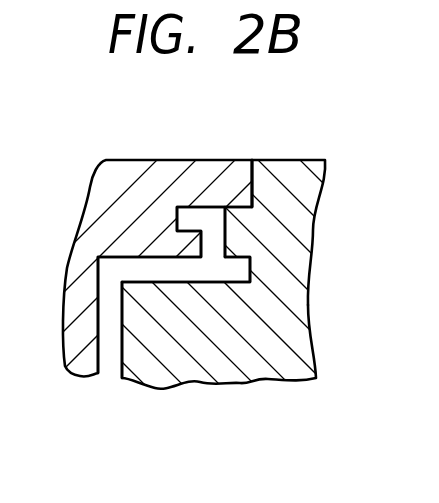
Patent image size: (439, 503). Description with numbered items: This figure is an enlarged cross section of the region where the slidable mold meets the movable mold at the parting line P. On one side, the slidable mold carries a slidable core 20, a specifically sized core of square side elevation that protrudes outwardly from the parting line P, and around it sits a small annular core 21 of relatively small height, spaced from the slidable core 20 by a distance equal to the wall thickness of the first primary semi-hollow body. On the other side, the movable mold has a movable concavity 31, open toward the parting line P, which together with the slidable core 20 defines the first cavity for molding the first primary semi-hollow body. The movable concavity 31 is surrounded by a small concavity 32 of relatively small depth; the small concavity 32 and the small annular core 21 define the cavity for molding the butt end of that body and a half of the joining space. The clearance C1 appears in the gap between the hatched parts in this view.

The slidable core 20 is at (132, 330).
The small annular core 21 is at (238, 232).
The movable concavity 31 is at (72, 256).
The small concavity 32 is at (190, 222).
The parting line P is at (253, 168).
The clearance C1 is at (110, 347).